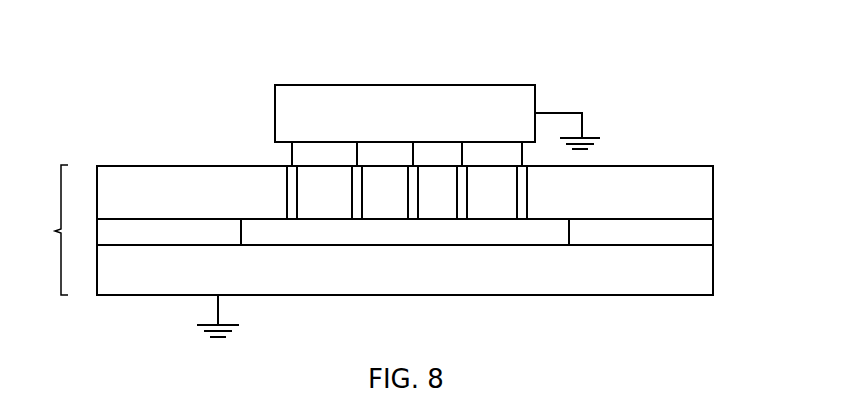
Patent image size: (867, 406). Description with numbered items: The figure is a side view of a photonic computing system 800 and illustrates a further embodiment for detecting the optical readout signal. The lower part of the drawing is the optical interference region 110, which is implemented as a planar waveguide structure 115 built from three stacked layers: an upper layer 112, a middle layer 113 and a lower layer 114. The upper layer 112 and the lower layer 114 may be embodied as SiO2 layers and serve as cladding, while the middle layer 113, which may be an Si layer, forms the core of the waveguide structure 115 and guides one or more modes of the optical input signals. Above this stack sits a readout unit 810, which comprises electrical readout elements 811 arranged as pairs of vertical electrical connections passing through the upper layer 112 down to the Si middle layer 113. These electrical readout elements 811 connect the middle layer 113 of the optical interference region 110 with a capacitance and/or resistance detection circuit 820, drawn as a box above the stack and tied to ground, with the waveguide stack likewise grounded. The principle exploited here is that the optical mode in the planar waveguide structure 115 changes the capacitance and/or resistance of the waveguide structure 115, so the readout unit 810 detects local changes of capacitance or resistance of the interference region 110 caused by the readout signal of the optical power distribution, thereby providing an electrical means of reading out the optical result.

The photonic computing system 800 is at (756, 392).
The readout unit 810 is at (203, 78).
The capacitance and/or resistance detection circuit 820 is at (310, 108).
The electrical readout elements 811 is at (287, 195).
The optical interference region 110 is at (353, 237).
The upper layer 112 is at (682, 190).
The middle layer 113 is at (688, 232).
The lower layer 114 is at (692, 257).
The planar waveguide structure 115 is at (34, 230).